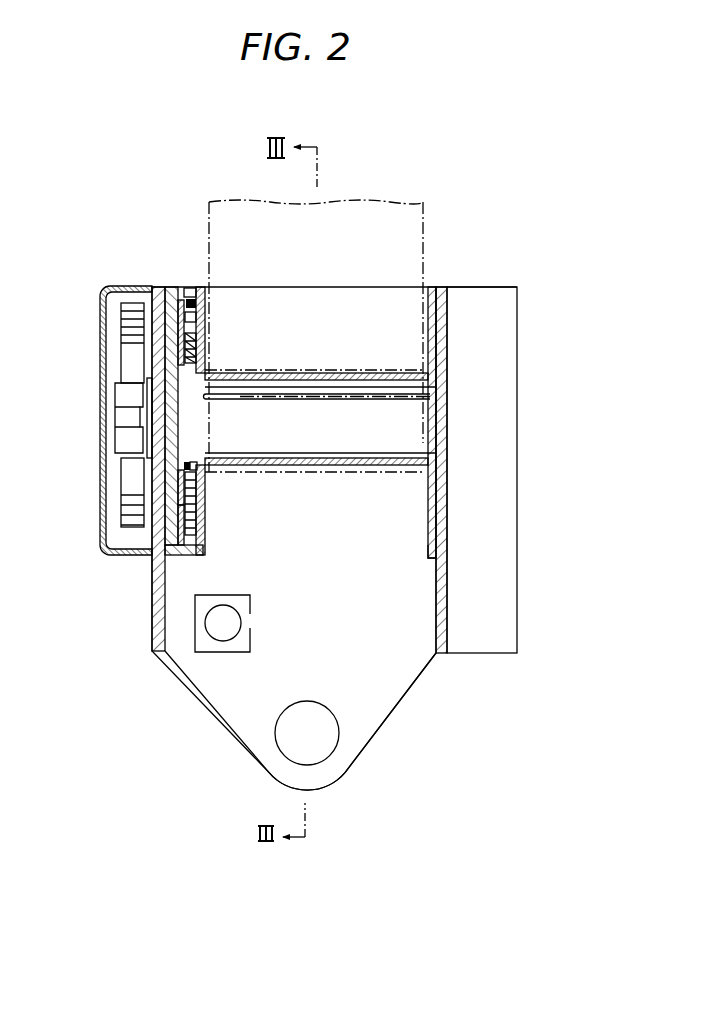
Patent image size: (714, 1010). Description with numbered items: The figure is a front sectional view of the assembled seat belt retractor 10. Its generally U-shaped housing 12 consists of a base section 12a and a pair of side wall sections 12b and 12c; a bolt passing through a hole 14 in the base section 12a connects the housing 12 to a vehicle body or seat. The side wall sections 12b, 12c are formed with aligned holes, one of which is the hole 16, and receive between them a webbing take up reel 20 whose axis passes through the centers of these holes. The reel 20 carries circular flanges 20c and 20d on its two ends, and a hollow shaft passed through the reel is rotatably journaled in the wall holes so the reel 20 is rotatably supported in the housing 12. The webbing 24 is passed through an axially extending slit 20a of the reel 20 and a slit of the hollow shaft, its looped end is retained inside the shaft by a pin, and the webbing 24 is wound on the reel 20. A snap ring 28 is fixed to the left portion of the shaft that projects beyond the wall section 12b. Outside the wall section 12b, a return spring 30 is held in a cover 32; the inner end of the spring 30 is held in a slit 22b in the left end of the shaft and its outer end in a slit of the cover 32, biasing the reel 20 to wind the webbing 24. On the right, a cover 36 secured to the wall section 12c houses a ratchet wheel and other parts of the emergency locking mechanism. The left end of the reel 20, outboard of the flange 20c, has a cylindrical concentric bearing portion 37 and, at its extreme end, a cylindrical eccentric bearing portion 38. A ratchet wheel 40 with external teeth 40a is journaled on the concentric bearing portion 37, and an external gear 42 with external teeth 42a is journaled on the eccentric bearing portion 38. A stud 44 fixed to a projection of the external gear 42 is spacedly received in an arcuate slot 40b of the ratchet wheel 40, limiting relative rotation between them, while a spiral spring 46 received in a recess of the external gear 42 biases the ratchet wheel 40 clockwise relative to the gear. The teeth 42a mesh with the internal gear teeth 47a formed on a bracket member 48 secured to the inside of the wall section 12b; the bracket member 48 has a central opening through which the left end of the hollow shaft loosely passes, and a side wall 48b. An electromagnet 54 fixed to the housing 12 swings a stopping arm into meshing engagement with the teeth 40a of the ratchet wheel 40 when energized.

The seat belt retractor 10 is at (523, 113).
The housing 12 is at (414, 693).
The base section 12a is at (370, 724).
The side wall section 12b is at (151, 651).
The side wall section 12c is at (500, 691).
The hole 14 is at (325, 743).
The hole 16 is at (152, 467).
The webbing take up reel 20 is at (372, 472).
The slit 20a is at (422, 446).
The circular flange 20c is at (280, 553).
The circular flange 20d is at (430, 549).
The slit 22b is at (123, 420).
The webbing 24 is at (397, 200).
The snap ring 28 is at (143, 443).
The return spring 30 is at (128, 357).
The cover 32 is at (136, 283).
The cover 36 is at (517, 526).
The cylindrical concentric bearing portion 37 is at (197, 460).
The cylindrical eccentric bearing portion 38 is at (188, 462).
The ratchet wheel 40 is at (200, 488).
The external teeth 40a is at (277, 267).
The arcuate slot 40b is at (187, 313).
The external gear 42 is at (176, 285).
The external teeth 42a is at (182, 512).
The stud 44 is at (183, 320).
The spiral spring 46 is at (185, 358).
The bearing strip 47a is at (180, 516).
The bracket member 48 is at (172, 557).
The side wall 48b is at (268, 580).
The electromagnet 54 is at (207, 648).